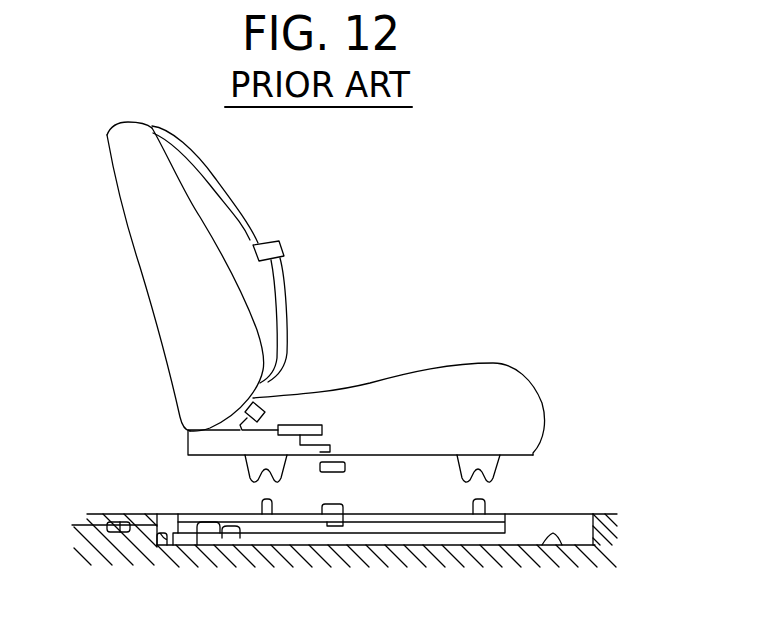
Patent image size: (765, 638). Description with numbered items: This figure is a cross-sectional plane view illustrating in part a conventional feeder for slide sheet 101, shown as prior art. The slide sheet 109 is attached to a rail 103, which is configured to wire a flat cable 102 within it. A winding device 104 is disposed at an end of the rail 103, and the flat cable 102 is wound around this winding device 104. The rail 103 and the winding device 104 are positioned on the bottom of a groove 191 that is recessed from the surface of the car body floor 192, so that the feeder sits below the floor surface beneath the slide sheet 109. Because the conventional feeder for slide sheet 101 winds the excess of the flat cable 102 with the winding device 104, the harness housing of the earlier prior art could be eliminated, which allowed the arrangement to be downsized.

The conventional feeder for slide sheet 101 is at (165, 511).
The flat cable 102 is at (197, 547).
The rail 103 is at (241, 545).
The winding device 104 is at (157, 548).
The slide sheet 109 is at (422, 370).
The groove 191 is at (562, 546).
The car body floor 192 is at (605, 513).